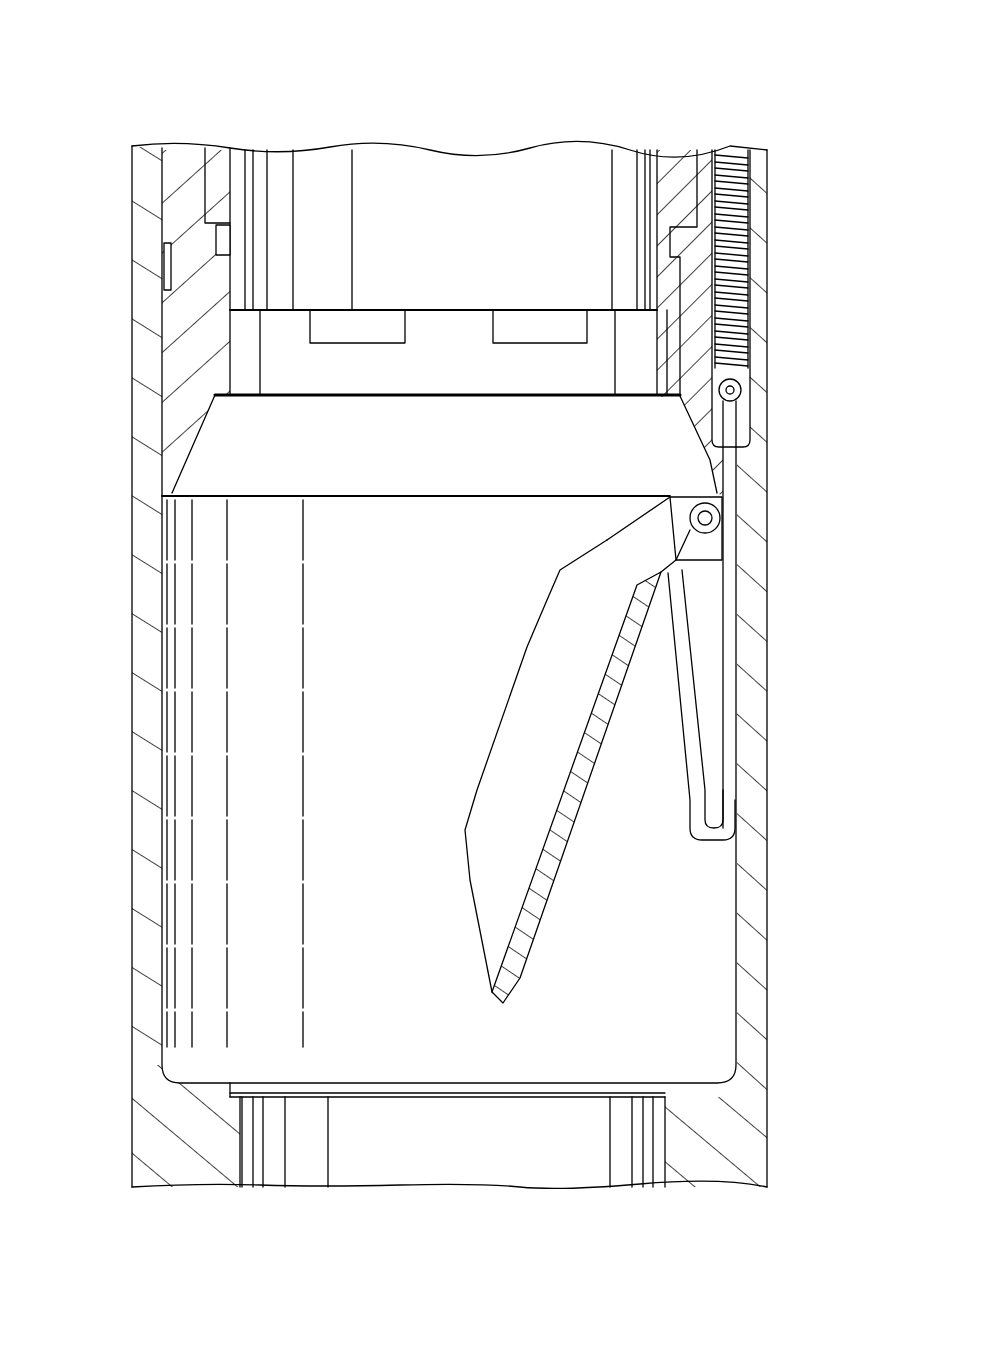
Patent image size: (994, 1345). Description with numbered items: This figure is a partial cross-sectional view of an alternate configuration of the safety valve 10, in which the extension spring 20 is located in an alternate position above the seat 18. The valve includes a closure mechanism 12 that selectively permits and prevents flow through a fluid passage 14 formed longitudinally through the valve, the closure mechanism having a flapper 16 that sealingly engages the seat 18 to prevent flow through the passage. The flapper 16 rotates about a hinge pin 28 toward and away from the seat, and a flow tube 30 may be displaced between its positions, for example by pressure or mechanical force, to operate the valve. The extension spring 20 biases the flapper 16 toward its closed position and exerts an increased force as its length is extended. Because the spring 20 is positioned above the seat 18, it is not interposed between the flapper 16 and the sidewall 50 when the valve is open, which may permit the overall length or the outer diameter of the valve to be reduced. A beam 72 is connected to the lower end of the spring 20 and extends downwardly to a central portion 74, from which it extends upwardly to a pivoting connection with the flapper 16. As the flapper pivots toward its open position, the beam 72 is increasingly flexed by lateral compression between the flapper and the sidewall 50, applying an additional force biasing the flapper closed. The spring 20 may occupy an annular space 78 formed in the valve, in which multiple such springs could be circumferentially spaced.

The safety valve 10 is at (779, 86).
The closure mechanism 12 is at (512, 782).
The fluid passage 14 is at (427, 690).
The flapper 16 is at (530, 973).
The seat 18 is at (187, 458).
The extension spring 20 is at (748, 276).
The hinge pin 28 is at (713, 515).
The flow tube 30 is at (227, 273).
The sidewall 50 is at (449, 664).
The beam 72 is at (732, 556).
The central portion 74 is at (720, 841).
The annular space 78 is at (741, 426).